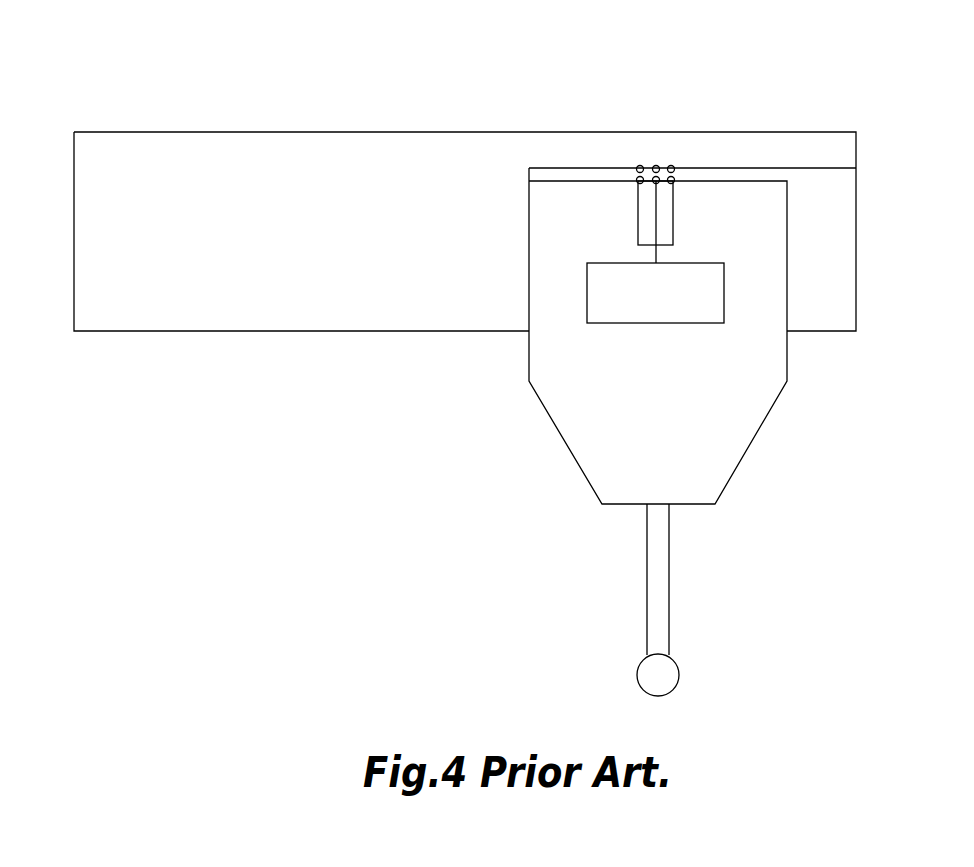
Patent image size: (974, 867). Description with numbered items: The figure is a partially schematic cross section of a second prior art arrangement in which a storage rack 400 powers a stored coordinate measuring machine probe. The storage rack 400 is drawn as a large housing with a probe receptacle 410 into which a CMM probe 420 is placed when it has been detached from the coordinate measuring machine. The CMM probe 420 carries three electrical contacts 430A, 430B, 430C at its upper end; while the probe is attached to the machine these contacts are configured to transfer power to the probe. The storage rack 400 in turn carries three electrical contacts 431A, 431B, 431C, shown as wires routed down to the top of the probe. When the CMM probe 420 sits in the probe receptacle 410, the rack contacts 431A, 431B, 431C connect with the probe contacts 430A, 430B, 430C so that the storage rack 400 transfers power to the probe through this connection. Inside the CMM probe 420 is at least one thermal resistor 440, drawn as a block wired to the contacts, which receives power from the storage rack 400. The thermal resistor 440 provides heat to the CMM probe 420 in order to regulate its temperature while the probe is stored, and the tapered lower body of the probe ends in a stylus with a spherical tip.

The storage rack 400 is at (827, 67).
The probe receptacle 410 is at (857, 227).
The CMM probe 420 is at (789, 349).
The electrical contact 430A is at (642, 165).
The electrical contact 430B is at (657, 165).
The electrical contact 430C is at (672, 165).
The electrical contact 431A is at (637, 188).
The electrical contact 431B is at (655, 200).
The electrical contact 431C is at (671, 186).
The thermal resistor 440 is at (587, 290).